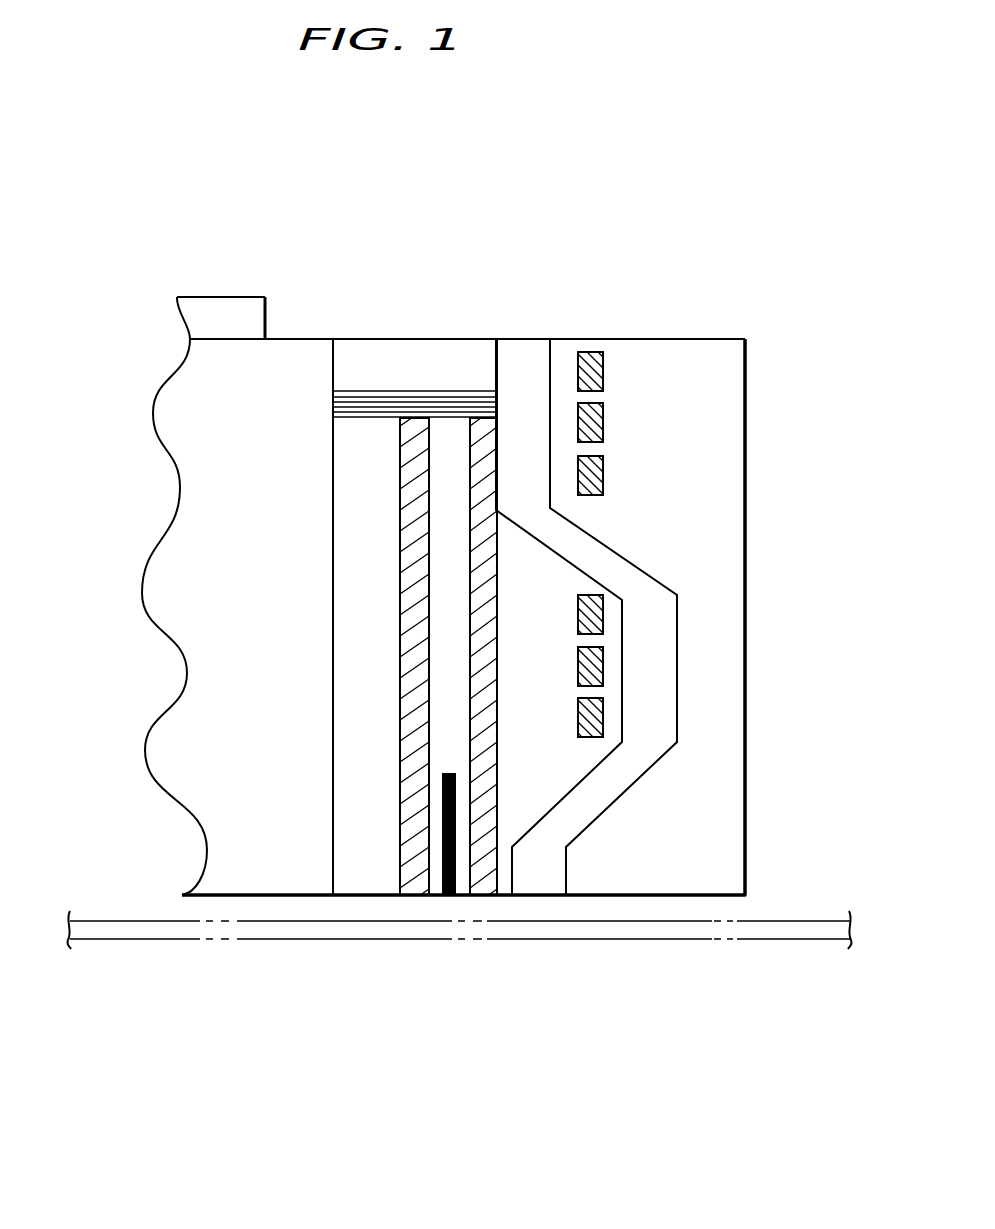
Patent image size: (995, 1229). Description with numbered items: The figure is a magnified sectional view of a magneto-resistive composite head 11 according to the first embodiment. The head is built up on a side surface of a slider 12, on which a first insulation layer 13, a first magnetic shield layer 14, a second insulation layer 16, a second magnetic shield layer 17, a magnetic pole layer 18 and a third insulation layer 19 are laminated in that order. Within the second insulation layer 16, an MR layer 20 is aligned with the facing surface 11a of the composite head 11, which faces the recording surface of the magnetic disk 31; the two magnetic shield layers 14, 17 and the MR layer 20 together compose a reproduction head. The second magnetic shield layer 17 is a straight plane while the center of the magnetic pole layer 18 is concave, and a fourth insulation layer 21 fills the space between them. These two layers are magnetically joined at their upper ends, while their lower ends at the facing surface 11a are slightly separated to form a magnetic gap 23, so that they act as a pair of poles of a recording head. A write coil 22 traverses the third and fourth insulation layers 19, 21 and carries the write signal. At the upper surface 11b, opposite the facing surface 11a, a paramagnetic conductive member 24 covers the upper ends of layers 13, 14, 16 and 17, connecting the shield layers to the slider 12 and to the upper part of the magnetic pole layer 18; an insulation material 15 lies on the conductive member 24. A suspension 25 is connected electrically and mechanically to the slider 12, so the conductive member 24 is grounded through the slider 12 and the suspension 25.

The magneto-resistive composite head 11 is at (811, 242).
The facing surface 11a is at (718, 898).
The upper surface 11b is at (514, 326).
The slider 12 is at (241, 363).
The first insulation layer 13 is at (343, 440).
The first magnetic shield layer 14 is at (413, 892).
The insulation material 15 is at (380, 367).
The second insulation layer 16 is at (447, 443).
The second magnetic shield layer 17 is at (485, 883).
The magnetic pole layer 18 is at (547, 883).
The third insulation layer 19 is at (727, 362).
The MR layer 20 is at (448, 897).
The fourth insulation layer 21 is at (577, 758).
The write coil 22 is at (588, 355).
The magnetic gap 23 is at (503, 897).
The conductive member 24 is at (418, 393).
The suspension 25 is at (197, 307).
The magnetic disk 31 is at (814, 922).